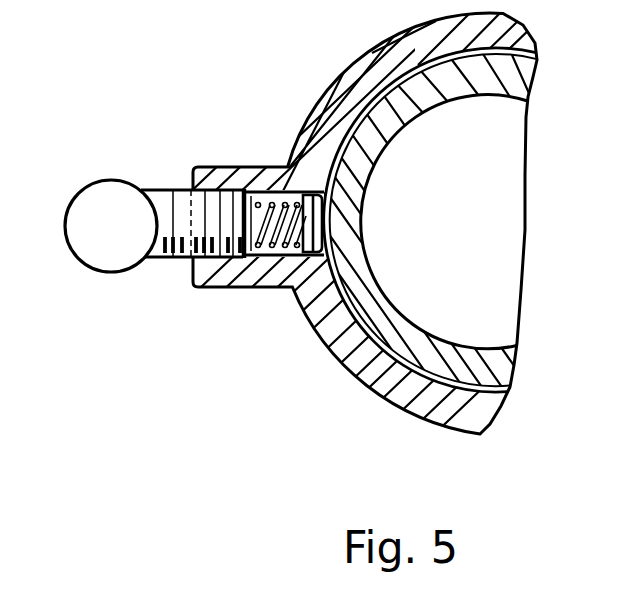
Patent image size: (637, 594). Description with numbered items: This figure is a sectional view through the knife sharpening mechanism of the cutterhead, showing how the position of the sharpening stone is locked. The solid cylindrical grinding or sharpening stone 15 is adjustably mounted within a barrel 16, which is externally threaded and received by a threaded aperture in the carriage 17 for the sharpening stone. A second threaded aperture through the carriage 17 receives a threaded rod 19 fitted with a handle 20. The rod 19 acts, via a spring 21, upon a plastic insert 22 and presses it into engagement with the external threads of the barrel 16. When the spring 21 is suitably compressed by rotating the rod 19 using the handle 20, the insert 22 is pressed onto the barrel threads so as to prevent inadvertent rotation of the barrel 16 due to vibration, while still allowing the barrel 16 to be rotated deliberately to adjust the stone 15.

The grinding or sharpening stone 15 is at (512, 175).
The barrel 16 is at (530, 46).
The carriage 17 is at (366, 364).
The threaded rod 19 is at (170, 259).
The handle 20 is at (80, 262).
The spring 21 is at (276, 259).
The plastic insert 22 is at (320, 219).